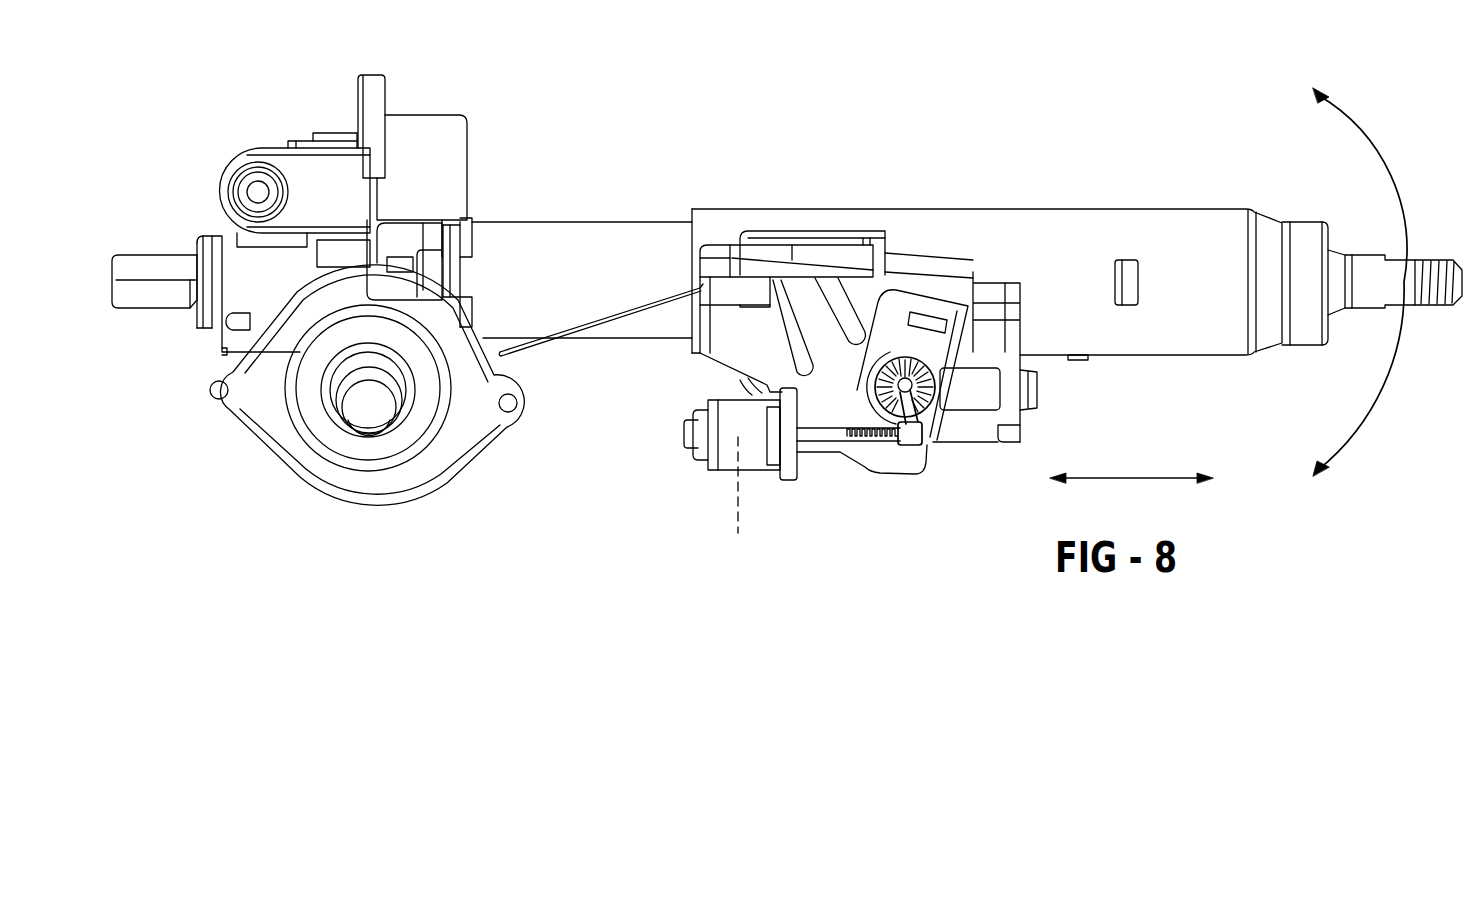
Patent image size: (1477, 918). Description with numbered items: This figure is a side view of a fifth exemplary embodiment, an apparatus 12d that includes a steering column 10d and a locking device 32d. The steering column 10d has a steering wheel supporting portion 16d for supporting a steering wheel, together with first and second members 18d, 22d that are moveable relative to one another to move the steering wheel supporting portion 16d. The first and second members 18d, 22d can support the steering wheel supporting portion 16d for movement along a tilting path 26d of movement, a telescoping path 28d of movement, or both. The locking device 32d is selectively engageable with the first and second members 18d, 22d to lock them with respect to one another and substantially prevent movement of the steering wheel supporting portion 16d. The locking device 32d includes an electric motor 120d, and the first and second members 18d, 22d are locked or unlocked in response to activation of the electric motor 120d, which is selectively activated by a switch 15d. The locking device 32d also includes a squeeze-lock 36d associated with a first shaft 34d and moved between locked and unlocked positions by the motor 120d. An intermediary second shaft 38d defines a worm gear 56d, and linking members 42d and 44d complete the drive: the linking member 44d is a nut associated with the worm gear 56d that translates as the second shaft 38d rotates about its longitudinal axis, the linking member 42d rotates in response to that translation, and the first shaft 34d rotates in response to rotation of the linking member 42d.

The steering column 10d is at (628, 174).
The apparatus 12d is at (942, 103).
The switch 15d is at (753, 570).
The steering wheel supporting portion 16d is at (1438, 310).
The first member 18d is at (1200, 227).
The second member 22d is at (558, 238).
The tilting path 26d is at (1385, 392).
The telescoping path 28d is at (1140, 478).
The locking device 32d is at (878, 517).
The first shaft 34d is at (935, 435).
The squeeze-lock 36d is at (917, 493).
The second shaft 38d is at (823, 435).
The linking member 42d is at (917, 437).
The linking member 44d is at (927, 437).
The worm gear 56d is at (870, 435).
The electric motor 120d is at (730, 432).